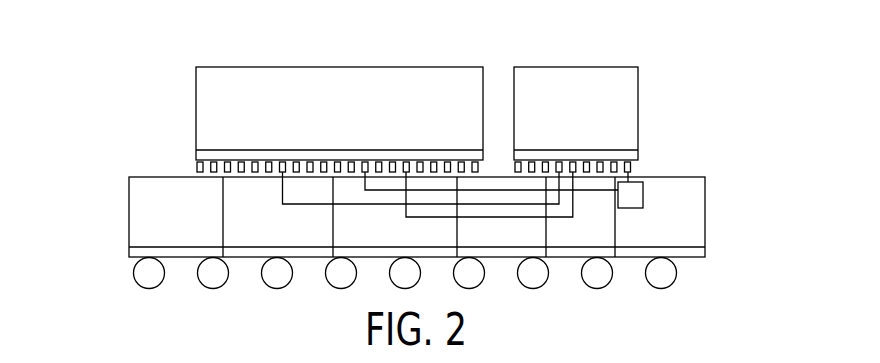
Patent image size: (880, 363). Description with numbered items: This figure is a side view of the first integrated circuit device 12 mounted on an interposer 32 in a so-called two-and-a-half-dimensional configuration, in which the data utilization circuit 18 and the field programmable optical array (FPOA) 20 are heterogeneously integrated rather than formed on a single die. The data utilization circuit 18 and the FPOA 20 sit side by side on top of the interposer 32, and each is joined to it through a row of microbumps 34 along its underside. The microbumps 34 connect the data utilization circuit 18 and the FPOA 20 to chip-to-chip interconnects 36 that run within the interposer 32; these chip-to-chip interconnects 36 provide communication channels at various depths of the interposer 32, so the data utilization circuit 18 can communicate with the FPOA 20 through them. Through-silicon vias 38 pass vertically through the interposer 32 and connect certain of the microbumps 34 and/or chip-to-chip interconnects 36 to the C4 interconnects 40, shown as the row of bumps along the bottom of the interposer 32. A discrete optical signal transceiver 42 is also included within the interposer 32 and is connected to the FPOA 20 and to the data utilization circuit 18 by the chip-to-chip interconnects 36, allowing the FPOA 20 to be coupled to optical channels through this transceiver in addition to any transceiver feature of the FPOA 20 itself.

The first integrated circuit device 12 is at (130, 45).
The data utilization circuit 18 is at (341, 67).
The field programmable optical array (FPOA) 20 is at (576, 67).
The interposer 32 is at (705, 215).
The microbumps 34 is at (186, 168).
The chip-to-chip interconnects 36 is at (432, 226).
The through-silicon vias (TSVs) 38 is at (223, 233).
The C4 interconnects 40 is at (690, 282).
The discrete optical signal transceiver 42 is at (632, 208).